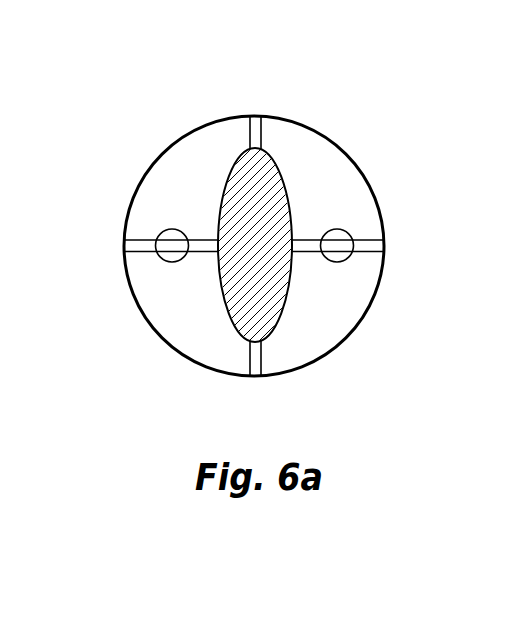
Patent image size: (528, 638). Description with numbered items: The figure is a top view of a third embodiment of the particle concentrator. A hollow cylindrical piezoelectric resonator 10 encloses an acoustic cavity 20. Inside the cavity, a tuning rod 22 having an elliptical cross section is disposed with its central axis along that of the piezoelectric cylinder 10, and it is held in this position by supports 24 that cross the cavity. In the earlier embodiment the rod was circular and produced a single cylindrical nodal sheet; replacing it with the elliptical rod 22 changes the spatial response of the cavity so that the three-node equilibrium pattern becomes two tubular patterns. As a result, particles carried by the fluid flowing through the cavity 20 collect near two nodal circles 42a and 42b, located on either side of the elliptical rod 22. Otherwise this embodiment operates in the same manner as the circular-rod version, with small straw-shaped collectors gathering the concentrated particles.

The cylindrical resonator 10 is at (298, 121).
The cavity 20 is at (325, 178).
The tuning rod 22 is at (268, 256).
The supports 24 is at (248, 138).
The nodal circle 42a is at (170, 264).
The nodal circle 42b is at (343, 228).